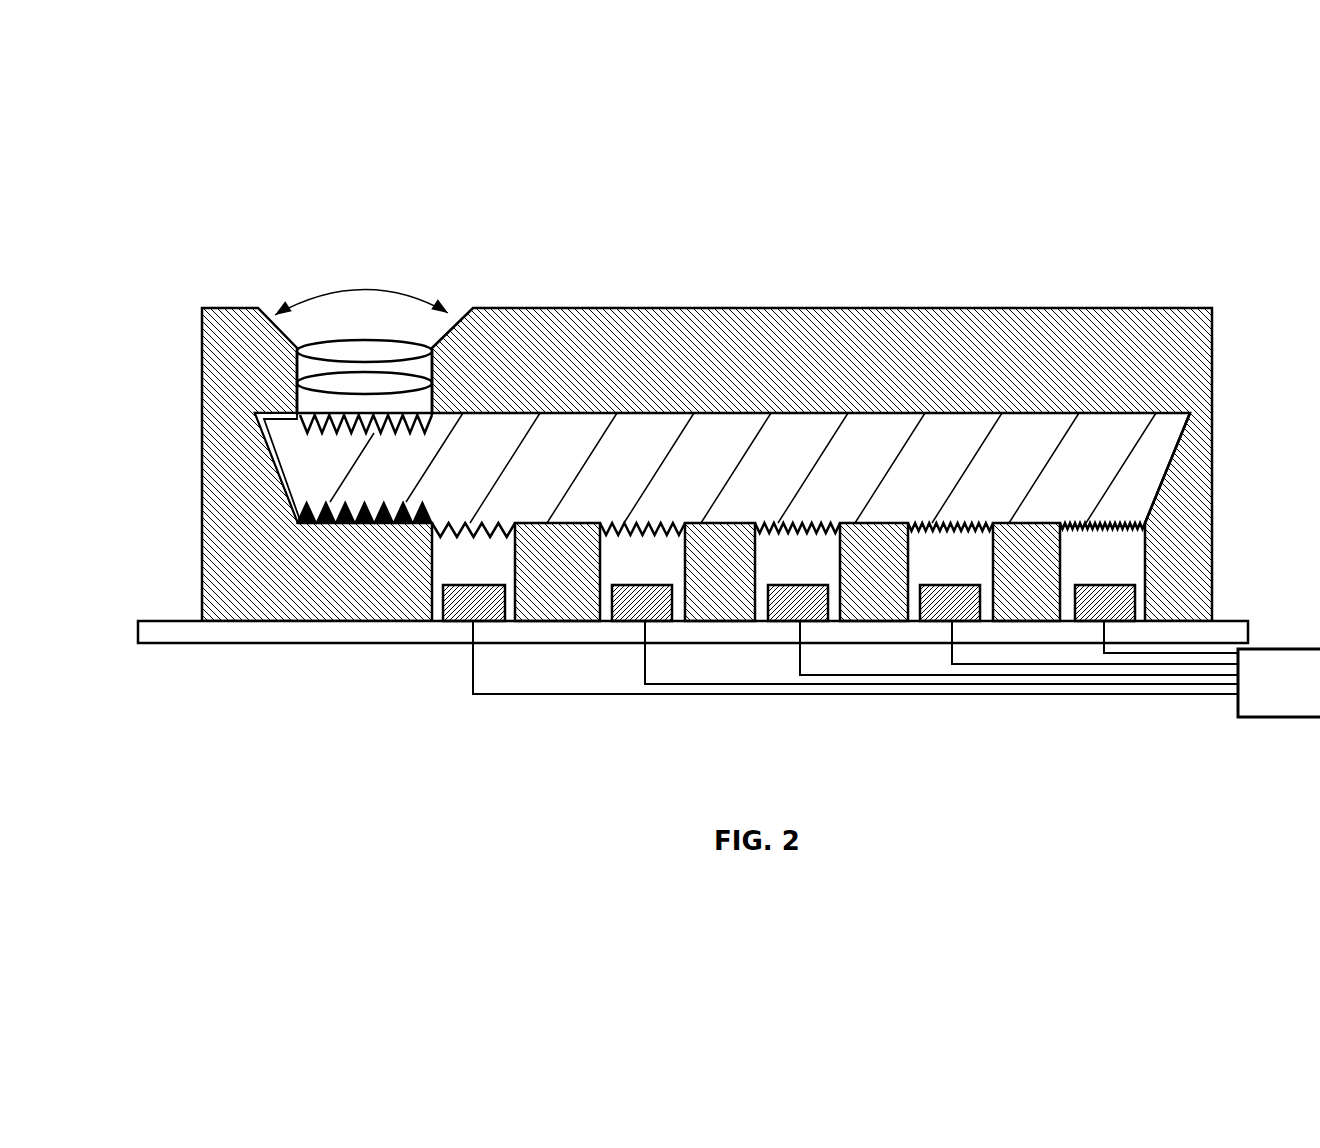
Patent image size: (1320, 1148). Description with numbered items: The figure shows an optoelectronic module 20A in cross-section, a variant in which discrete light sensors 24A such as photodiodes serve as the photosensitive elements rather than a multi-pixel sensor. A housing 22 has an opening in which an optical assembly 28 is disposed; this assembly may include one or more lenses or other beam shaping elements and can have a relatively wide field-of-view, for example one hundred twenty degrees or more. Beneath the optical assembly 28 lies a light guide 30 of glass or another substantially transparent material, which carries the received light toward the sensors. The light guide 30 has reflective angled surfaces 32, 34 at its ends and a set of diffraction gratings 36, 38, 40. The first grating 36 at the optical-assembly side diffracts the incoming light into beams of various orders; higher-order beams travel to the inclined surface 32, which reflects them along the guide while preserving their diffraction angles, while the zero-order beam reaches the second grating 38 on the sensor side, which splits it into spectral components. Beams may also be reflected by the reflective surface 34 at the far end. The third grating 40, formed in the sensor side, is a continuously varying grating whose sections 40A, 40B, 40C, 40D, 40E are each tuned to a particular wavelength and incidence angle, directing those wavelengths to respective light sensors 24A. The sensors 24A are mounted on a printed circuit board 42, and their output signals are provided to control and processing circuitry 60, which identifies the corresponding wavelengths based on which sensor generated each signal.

The module 20A is at (1042, 272).
The housing 22 is at (777, 327).
The discrete light sensors 24A is at (443, 618).
The optical assembly 28 is at (403, 337).
The light guide 30 is at (1038, 427).
The reflective angled surface 32 is at (285, 470).
The reflective surface 34 is at (1168, 470).
The first diffraction grating 36 is at (352, 424).
The second diffraction grating 38 is at (360, 523).
The third diffraction grating 40 is at (428, 490).
The first section of the third grating 40A is at (483, 513).
The second section of the third grating 40B is at (650, 513).
The third section of the third grating 40C is at (805, 513).
The fourth section of the third grating 40D is at (945, 513).
The fifth section of the third grating 40E is at (1125, 522).
The printed circuit board 42 is at (165, 637).
The control and processing circuitry 60 is at (1287, 705).